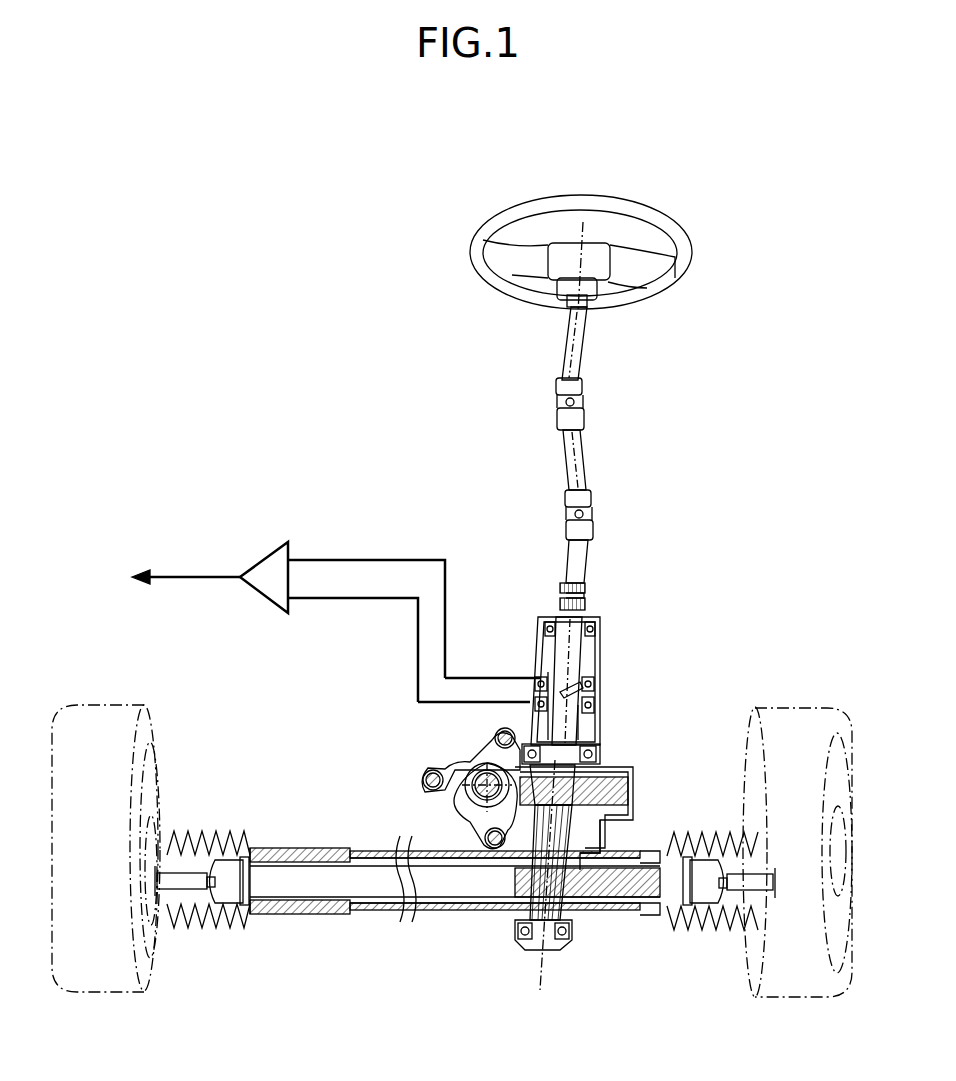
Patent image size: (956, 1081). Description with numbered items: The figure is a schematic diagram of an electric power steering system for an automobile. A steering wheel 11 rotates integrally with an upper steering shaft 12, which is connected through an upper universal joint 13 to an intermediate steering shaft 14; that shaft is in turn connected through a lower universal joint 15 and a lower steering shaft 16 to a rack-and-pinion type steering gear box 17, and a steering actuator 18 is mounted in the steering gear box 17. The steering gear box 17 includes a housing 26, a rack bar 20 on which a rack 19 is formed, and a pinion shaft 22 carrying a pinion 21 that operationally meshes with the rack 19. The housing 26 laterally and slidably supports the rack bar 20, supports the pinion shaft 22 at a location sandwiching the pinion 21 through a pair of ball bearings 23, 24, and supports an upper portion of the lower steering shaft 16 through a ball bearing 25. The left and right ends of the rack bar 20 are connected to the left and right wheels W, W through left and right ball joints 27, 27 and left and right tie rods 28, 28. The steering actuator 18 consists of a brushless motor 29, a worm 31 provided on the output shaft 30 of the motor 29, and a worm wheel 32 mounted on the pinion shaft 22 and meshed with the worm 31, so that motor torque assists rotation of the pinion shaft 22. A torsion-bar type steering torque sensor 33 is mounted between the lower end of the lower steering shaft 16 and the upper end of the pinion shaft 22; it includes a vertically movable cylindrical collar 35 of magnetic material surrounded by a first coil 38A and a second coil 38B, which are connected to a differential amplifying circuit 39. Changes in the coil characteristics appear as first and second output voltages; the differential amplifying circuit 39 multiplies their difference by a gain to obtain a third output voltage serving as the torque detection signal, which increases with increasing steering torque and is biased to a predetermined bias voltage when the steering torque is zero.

The steering wheel 11 is at (483, 228).
The upper steering shaft 12 is at (590, 350).
The upper universal joint 13 is at (598, 395).
The intermediate steering shaft 14 is at (592, 462).
The lower universal joint 15 is at (596, 511).
The lower steering shaft 16 is at (588, 650).
The steering gear box 17 is at (376, 842).
The steering actuator 18 is at (642, 792).
The rack 19 is at (604, 897).
The rack bar 20 is at (365, 897).
The pinion 21 is at (515, 909).
The pinion shaft 22 is at (600, 832).
The ball bearing 23 is at (548, 947).
The ball bearing 24 is at (600, 757).
The ball bearing 25 is at (600, 626).
The housing 26 is at (392, 910).
The ball joint 27 is at (222, 850).
The tie rod 28 is at (186, 878).
The brushless motor 29 is at (440, 773).
The output shaft 30 is at (470, 787).
The worm 31 is at (478, 808).
The worm wheel 32 is at (633, 800).
The steering torque sensor 33 is at (601, 693).
The collar 35 is at (592, 706).
The first coil 38A is at (537, 682).
The second coil 38B is at (535, 708).
The differential amplifying circuit 39 is at (263, 559).
The wheel W is at (88, 703).